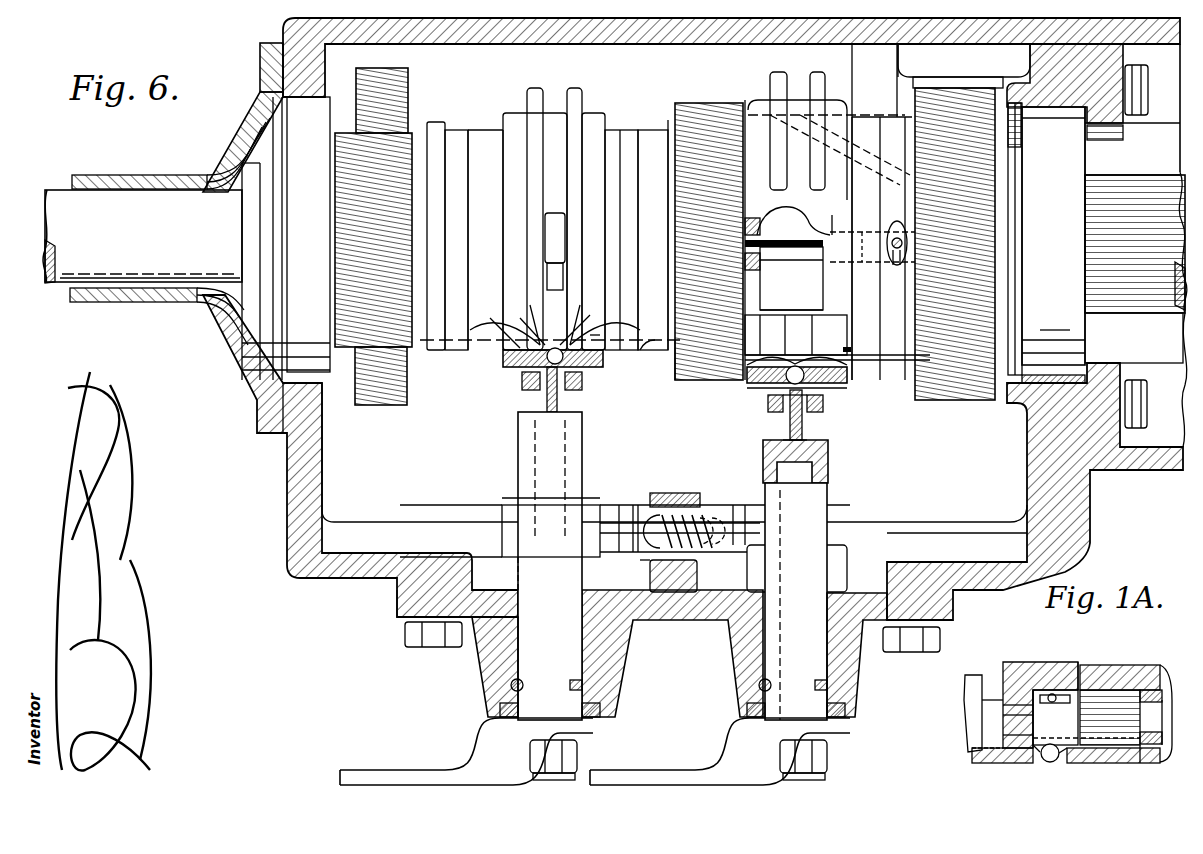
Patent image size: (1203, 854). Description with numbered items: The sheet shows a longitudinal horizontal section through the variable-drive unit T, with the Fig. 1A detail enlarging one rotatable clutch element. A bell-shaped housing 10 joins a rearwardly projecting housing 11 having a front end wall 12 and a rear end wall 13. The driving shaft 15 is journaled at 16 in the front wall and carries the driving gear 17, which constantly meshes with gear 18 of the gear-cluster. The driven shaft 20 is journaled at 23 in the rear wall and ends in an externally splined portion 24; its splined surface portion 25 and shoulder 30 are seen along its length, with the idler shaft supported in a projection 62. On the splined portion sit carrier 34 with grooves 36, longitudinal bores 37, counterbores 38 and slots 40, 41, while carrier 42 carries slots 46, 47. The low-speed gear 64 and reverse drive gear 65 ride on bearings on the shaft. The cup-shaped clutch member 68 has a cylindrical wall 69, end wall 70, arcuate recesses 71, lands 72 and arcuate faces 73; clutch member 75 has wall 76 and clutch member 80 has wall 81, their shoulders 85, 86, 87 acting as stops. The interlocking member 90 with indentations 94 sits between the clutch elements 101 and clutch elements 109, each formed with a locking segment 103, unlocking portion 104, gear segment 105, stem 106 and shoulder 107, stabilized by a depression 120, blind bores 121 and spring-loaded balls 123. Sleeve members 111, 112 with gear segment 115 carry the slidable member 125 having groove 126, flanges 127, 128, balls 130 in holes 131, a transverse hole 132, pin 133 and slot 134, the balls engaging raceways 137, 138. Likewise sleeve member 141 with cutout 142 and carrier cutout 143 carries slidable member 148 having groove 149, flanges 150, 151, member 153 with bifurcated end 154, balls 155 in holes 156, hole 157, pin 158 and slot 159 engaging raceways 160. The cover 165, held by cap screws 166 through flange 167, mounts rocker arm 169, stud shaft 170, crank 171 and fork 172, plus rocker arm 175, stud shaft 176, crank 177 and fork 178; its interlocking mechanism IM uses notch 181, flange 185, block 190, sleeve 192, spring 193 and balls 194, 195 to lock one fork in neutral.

In FIG. 6, the variable-drive unit T is at (292, 33).
In FIG. 6, the bell-shaped housing 10 is at (190, 183).
In FIG. 6, the rearwardly projecting housing 11 is at (690, 40).
In FIG. 6, the front end wall 12 is at (297, 462).
In FIG. 6, the rear end wall 13 is at (1072, 510).
In FIG. 6, the driving shaft 15 is at (68, 292).
In FIG. 6, the journal 16 is at (287, 342).
In FIG. 6, the driving gear 17 is at (350, 150).
In FIG. 1A, the driving gear 17 is at (1003, 703).
In FIG. 6, the gear 18 is at (375, 400).
In FIG. 6, the driven shaft 20 is at (1176, 310).
In FIG. 6, the bearing 23 is at (1070, 157).
In FIG. 6, the externally splined portion 24 is at (1132, 180).
In FIG. 1A, the splined surface portion 25 is at (975, 760).
In FIG. 6, the external annular shoulder 30 is at (1018, 302).
In FIG. 1A, the carrier 34 is at (1138, 748).
In FIG. 1A, the grooves 36 is at (1165, 752).
In FIG. 1A, the longitudinal bores 37 is at (1165, 700).
In FIG. 1A, the counterbores 38 is at (1003, 714).
In FIG. 1A, the inner longitudinal slot 40 is at (975, 748).
In FIG. 1A, the outer longitudinal slot 41 is at (1003, 700).
In FIG. 6, the carrier 42 is at (882, 222).
In FIG. 6, the inner longitudinal slot 46 is at (893, 255).
In FIG. 6, the outer longitudinal slot 47 is at (900, 258).
In FIG. 6, the projection 62 is at (862, 64).
In FIG. 6, the low-speed gear 64 is at (690, 125).
In FIG. 6, the reverse drive gear 65 is at (967, 385).
In FIG. 6, the cup-shaped clutch member 68 is at (444, 120).
In FIG. 1A, the cup-shaped clutch member 68 is at (1000, 678).
In FIG. 6, the cylindrical wall 69 is at (462, 356).
In FIG. 1A, the cylindrical wall 69 is at (1058, 694).
In FIG. 1A, the end wall 70 is at (1010, 668).
In FIG. 1A, the arcuate recesses 71 is at (1070, 690).
In FIG. 1A, the lands 72 is at (1038, 672).
In FIG. 1A, the arcuate faces 73 is at (1075, 728).
In FIG. 6, the clutch member 75 is at (658, 128).
In FIG. 6, the cylindrical wall 76 is at (655, 360).
In FIG. 6, the clutch member 80 is at (887, 112).
In FIG. 6, the cylindrical wall 81 is at (893, 128).
In FIG. 6, the annular shoulder 85 is at (450, 352).
In FIG. 1A, the annular shoulder 85 is at (1045, 690).
In FIG. 6, the annular shoulder 86 is at (675, 355).
In FIG. 6, the annular shoulder 87 is at (905, 78).
In FIG. 6, the interlocking member 90 is at (548, 332).
In FIG. 6, the indentations 94 is at (570, 318).
In FIG. 1A, the clutch elements 101 is at (1040, 753).
In FIG. 1A, the locking segment 103 is at (1003, 733).
In FIG. 1A, the arcuate unlocking portion 104 is at (1095, 690).
In FIG. 1A, the gear segment 105 is at (1158, 735).
In FIG. 6, the stem 106 is at (800, 240).
In FIG. 1A, the stem 106 is at (1162, 748).
In FIG. 1A, the annular shoulder 107 is at (1125, 672).
In FIG. 6, the clutch elements 109 is at (890, 242).
In FIG. 6, the sleeve member 111 is at (478, 352).
In FIG. 6, the sleeve member 112 is at (620, 356).
In FIG. 1A, the internal annular gear segment 115 is at (1152, 693).
In FIG. 1A, the depression 120 is at (1052, 695).
In FIG. 1A, the blind bores 121 is at (1063, 756).
In FIG. 1A, the spring-loaded ball 123 is at (1050, 762).
In FIG. 6, the slidable member 125 is at (575, 100).
In FIG. 6, the external annular groove 126 is at (550, 138).
In FIG. 6, the circular flange 127 is at (533, 110).
In FIG. 6, the circular flange 128 is at (580, 135).
In FIG. 6, the balls 130 is at (520, 330).
In FIG. 6, the holes 131 is at (585, 330).
In FIG. 6, the transverse hole 132 is at (538, 366).
In FIG. 6, the round pin 133 is at (575, 378).
In FIG. 6, the transverse slot 134 is at (550, 380).
In FIG. 6, the raceway 137 is at (500, 345).
In FIG. 6, the raceway 138 is at (585, 352).
In FIG. 6, the sleeve member 141 is at (632, 530).
In FIG. 6, the cutout 142 is at (805, 313).
In FIG. 6, the cutout 143 is at (780, 232).
In FIG. 6, the slidable member 148 is at (852, 349).
In FIG. 6, the external annular groove 149 is at (797, 110).
In FIG. 6, the circular flange 150 is at (768, 105).
In FIG. 6, the circular flange 151 is at (822, 343).
In FIG. 6, the member 153 is at (782, 268).
In FIG. 6, the bifurcated free end 154 is at (752, 270).
In FIG. 6, the balls 155 is at (828, 383).
In FIG. 6, the holes 156 is at (775, 397).
In FIG. 6, the transverse hole 157 is at (827, 388).
In FIG. 6, the round pin 158 is at (805, 395).
In FIG. 6, the transverse slot 159 is at (795, 412).
In FIG. 6, the angular raceways 160 is at (855, 150).
In FIG. 6, the cover 165 is at (634, 628).
In FIG. 6, the cap screws 166 is at (430, 648).
In FIG. 6, the marginal flange 167 is at (405, 615).
In FIG. 6, the rocker arm 169 is at (375, 775).
In FIG. 6, the stud shaft 170 is at (530, 660).
In FIG. 6, the crank 171 is at (520, 472).
In FIG. 6, the shifting fork 172 is at (548, 228).
In FIG. 6, the rocker arm 175 is at (700, 745).
In FIG. 6, the stud shaft 176 is at (775, 660).
In FIG. 6, the crank 177 is at (830, 452).
In FIG. 6, the shifting fork 178 is at (790, 432).
In FIG. 6, the arcuate notch 181 is at (640, 530).
In FIG. 6, the arcuate flange 185 is at (730, 498).
In FIG. 6, the block 190 is at (668, 488).
In FIG. 6, the sleeve 192 is at (697, 565).
In FIG. 6, the compression spring 193 is at (657, 560).
In FIG. 6, the ball 194 is at (658, 520).
In FIG. 6, the ball 195 is at (700, 525).
In FIG. 6, the selector interlocking mechanism IM is at (667, 490).